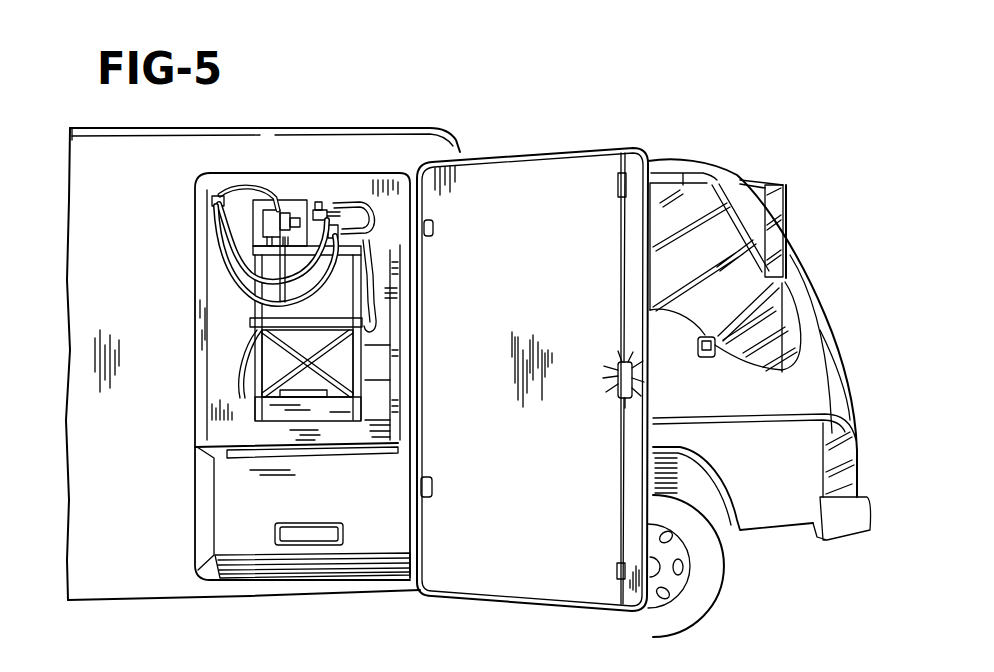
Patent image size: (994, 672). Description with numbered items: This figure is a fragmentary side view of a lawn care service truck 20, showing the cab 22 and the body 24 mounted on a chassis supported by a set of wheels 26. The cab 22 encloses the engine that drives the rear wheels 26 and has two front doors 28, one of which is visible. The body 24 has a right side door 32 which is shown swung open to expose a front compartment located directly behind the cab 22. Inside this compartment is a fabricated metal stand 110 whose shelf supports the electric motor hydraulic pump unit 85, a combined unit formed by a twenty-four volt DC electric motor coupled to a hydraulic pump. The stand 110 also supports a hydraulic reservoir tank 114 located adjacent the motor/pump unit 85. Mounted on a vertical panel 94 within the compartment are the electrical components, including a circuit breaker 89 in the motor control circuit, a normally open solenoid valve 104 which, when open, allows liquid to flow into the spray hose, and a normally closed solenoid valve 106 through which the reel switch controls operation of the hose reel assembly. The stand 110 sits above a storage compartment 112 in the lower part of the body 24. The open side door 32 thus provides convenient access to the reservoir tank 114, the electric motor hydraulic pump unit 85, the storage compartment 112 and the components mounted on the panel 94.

The truck 20 is at (580, 108).
The cab 22 is at (690, 152).
The body 24 is at (302, 120).
The wheels 26 is at (713, 580).
The front doors 28 is at (770, 411).
The right side door 32 is at (531, 172).
The electric motor hydraulic pump unit 85 is at (276, 295).
The circuit breaker 89 is at (272, 212).
The vertical panel 94 is at (358, 243).
The normally open solenoid valve 104 is at (338, 226).
The normally closed solenoid valve 106 is at (322, 210).
The fabricated metal stand 110 is at (360, 371).
The storage compartment 112 is at (390, 507).
The hydraulic reservoir tank 114 is at (343, 284).